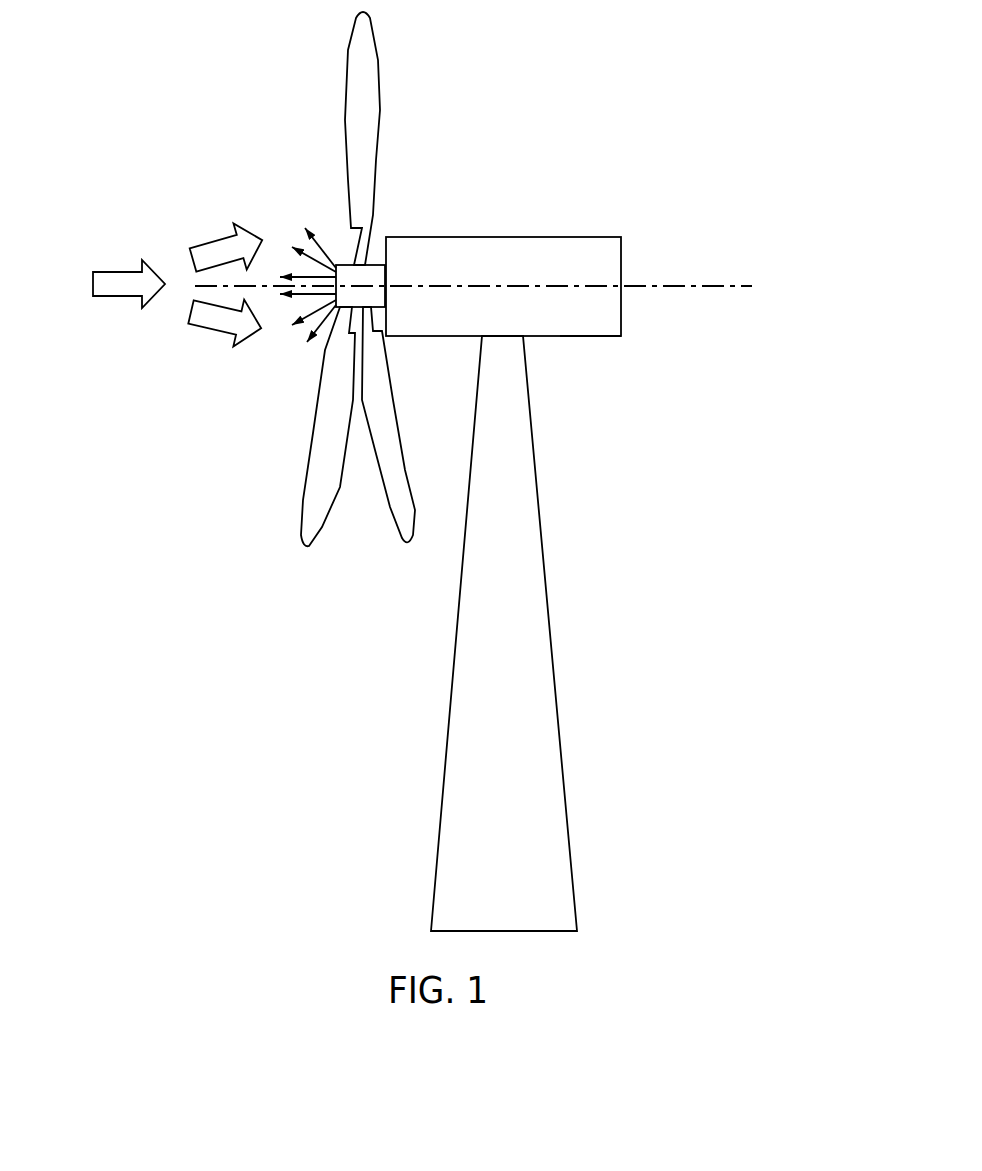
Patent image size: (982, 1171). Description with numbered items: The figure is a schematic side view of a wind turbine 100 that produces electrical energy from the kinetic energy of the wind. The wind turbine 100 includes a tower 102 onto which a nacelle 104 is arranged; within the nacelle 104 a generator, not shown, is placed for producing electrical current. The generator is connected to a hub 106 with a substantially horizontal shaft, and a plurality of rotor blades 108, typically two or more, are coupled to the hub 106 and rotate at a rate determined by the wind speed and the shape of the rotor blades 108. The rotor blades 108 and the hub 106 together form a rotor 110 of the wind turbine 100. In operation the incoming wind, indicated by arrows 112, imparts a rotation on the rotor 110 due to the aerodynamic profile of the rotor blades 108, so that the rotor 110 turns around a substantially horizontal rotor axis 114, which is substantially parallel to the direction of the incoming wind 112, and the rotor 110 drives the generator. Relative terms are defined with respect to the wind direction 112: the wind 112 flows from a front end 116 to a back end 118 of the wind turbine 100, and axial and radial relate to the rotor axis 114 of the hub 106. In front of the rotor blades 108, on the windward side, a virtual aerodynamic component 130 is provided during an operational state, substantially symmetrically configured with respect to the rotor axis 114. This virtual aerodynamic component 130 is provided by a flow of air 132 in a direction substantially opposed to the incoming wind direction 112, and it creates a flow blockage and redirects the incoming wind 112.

The wind turbine 100 is at (493, 471).
The tower 102 is at (552, 643).
The nacelle 104 is at (622, 252).
The hub 106 is at (372, 278).
The rotor blades 108 is at (353, 113).
The rotor 110 is at (380, 279).
The incoming wind 112 is at (118, 297).
The rotor axis 114 is at (687, 288).
The front end 116 is at (224, 203).
The back end 118 is at (640, 328).
The virtual aerodynamic component 130 is at (294, 234).
The flow of air 132 is at (300, 309).